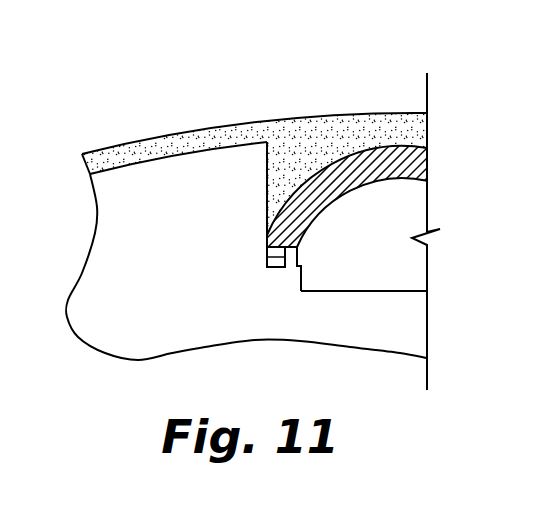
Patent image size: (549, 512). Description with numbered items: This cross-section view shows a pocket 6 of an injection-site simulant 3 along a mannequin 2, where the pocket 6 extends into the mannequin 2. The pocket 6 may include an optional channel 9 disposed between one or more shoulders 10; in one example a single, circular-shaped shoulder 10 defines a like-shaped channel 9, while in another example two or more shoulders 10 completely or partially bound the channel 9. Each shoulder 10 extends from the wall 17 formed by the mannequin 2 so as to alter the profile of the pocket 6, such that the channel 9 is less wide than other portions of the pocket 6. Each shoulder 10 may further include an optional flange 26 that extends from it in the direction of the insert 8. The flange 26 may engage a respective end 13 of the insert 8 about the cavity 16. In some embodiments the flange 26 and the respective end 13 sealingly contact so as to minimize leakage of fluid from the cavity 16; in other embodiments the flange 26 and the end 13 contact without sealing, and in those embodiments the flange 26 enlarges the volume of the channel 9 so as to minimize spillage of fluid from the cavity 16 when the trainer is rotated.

The mannequin 2 is at (124, 309).
The injection-site simulant 3 is at (125, 122).
The pocket 6 is at (266, 160).
The insert 8 is at (338, 162).
The channel 9 is at (327, 285).
The shoulder 10 is at (283, 268).
The end of the insert 13 is at (267, 235).
The cavity 16 is at (385, 228).
The wall 17 is at (267, 176).
The flange 26 is at (267, 258).